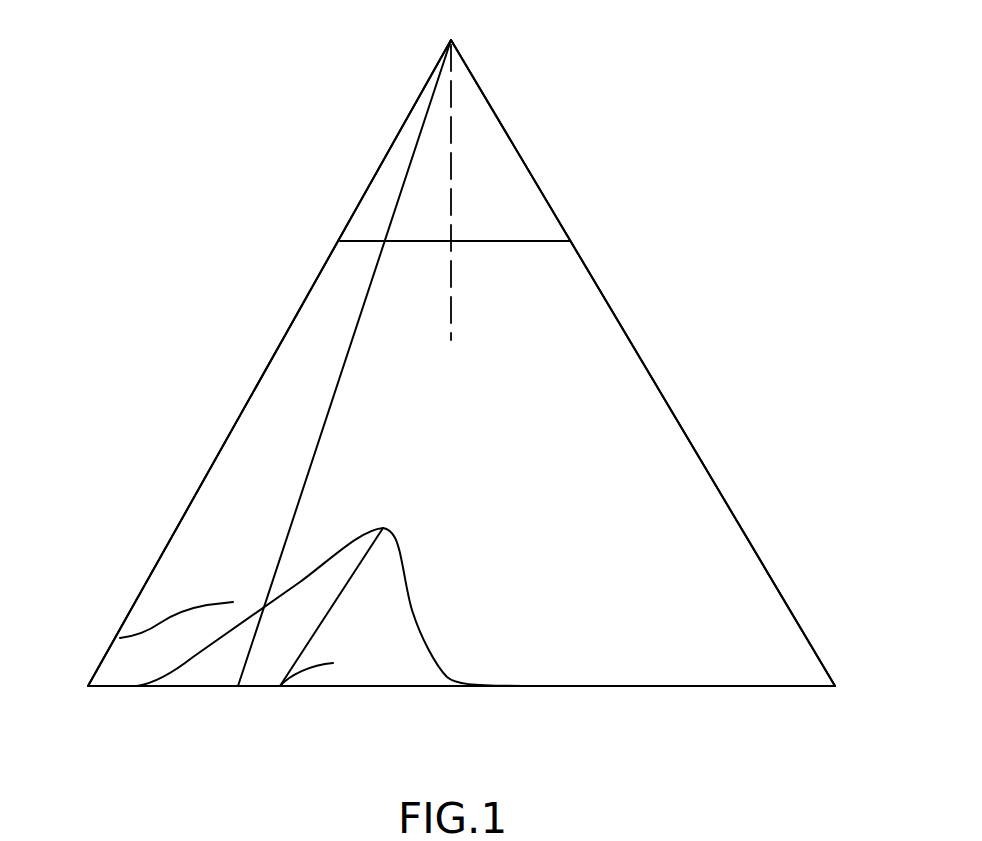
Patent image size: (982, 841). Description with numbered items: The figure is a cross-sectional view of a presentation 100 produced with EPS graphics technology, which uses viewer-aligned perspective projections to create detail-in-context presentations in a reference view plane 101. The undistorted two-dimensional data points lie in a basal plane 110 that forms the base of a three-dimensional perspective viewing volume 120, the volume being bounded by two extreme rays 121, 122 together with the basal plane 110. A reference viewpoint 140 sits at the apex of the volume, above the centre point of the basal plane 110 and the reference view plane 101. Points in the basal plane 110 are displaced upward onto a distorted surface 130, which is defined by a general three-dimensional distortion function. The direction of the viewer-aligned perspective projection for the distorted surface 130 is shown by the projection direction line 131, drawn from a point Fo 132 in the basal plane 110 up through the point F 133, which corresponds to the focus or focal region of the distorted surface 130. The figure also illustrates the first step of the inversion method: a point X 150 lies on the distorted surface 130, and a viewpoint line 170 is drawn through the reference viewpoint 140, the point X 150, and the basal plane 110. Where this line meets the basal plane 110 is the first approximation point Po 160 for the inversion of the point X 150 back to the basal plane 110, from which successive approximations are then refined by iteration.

The presentation 100 is at (794, 244).
The reference view plane 101 is at (508, 241).
The basal plane 110 is at (657, 686).
The three-dimensional perspective viewing volume 120 is at (708, 543).
The extreme ray 121 is at (642, 353).
The extreme ray 122 is at (273, 360).
The distorted surface 130 is at (413, 613).
The line Fo-F 131 is at (323, 618).
The point Fo 132 is at (337, 667).
The point F 133 is at (393, 530).
The reference viewpoint 140 is at (468, 43).
The point X 150 is at (120, 638).
The first approximation point Po 160 is at (210, 698).
The line RVP-X 170 is at (332, 400).